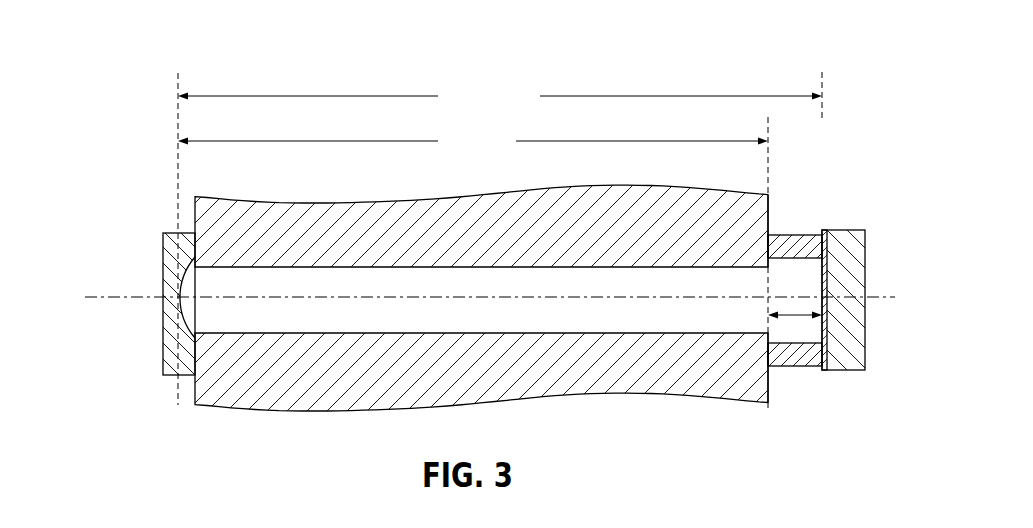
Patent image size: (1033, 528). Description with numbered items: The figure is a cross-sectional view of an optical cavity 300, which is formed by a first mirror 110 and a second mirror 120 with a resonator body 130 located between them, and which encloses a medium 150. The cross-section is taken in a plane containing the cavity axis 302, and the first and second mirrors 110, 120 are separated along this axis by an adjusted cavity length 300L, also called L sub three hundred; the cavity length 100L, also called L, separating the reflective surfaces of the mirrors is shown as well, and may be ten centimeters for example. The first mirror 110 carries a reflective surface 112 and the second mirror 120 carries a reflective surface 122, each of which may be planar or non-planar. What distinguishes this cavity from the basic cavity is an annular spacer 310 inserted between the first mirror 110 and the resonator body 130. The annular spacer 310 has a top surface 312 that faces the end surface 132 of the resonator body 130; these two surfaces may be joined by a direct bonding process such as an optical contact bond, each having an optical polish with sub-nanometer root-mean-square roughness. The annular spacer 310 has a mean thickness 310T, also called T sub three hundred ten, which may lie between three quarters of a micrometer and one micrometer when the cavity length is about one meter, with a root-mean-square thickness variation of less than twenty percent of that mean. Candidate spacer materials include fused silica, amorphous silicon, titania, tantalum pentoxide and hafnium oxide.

The optical cavity 300 is at (126, 44).
The adjusted cavity length 300L is at (500, 98).
The cavity length 100L is at (473, 141).
The resonator body 130 is at (588, 371).
The medium 150 is at (468, 308).
The second mirror 120 is at (172, 232).
The reflective surface 122 is at (190, 287).
The cavity axis 302 is at (116, 295).
The end surface 132 is at (777, 210).
The annular spacer 310 is at (794, 234).
The top surface 312 is at (760, 243).
The mean thickness 310T is at (766, 315).
The first mirror 110 is at (865, 378).
The reflective surface 112 is at (814, 277).